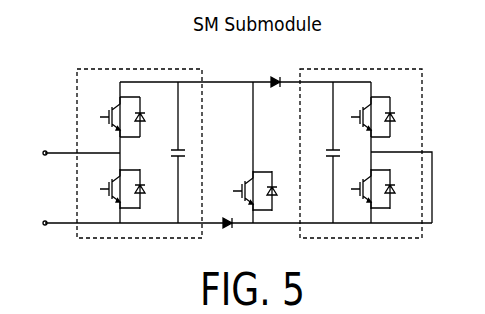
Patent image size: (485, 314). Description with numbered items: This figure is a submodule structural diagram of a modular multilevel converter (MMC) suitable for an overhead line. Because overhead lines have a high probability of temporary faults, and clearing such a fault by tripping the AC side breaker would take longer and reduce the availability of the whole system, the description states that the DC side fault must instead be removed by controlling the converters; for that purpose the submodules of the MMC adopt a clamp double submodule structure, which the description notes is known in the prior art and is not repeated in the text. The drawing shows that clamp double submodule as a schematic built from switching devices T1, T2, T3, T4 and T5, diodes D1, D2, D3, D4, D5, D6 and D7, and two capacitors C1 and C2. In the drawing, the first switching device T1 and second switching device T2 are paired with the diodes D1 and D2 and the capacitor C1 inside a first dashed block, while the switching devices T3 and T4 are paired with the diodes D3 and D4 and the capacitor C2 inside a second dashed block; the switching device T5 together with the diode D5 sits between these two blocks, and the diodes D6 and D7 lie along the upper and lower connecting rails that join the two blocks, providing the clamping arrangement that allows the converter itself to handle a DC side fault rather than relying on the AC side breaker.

The first IGBT switch T1 is at (114, 111).
The second IGBT switch T2 is at (114, 194).
The third IGBT switch T3 is at (366, 114).
The fourth IGBT switch T4 is at (366, 194).
The fifth IGBT switch T5 is at (244, 187).
The first anti-parallel diode D1 is at (151, 117).
The second anti-parallel diode D2 is at (151, 189).
The third anti-parallel diode D3 is at (396, 107).
The fourth anti-parallel diode D4 is at (402, 189).
The fifth anti-parallel diode D5 is at (274, 179).
The sixth diode D6 is at (273, 71).
The seventh diode D7 is at (233, 231).
The first capacitor C1 is at (163, 152).
The second capacitor C2 is at (321, 152).